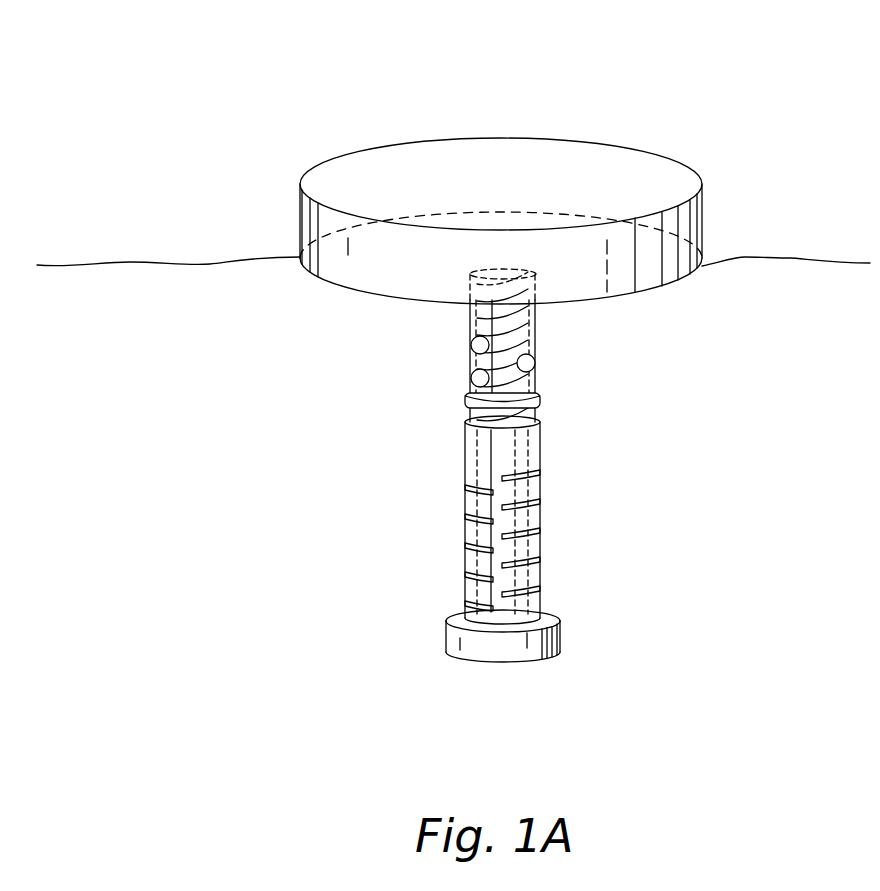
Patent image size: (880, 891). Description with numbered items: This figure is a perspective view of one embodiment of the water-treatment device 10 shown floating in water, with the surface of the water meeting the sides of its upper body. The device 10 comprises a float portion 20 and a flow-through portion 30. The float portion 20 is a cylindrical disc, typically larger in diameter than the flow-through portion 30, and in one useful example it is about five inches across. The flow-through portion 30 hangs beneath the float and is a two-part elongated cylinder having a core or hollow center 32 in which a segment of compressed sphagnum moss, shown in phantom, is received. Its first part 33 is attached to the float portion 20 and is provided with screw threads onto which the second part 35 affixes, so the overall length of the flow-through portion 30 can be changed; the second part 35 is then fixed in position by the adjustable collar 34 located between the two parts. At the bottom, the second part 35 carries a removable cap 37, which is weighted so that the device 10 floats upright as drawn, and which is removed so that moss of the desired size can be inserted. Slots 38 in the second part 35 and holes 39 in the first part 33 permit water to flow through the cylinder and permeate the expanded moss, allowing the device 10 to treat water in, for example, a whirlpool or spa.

The device 10 is at (722, 88).
The float portion 20 is at (658, 178).
The flow-through portion 30 is at (603, 478).
The hollow center 32 is at (533, 335).
The first part 33 is at (470, 323).
The adjustable collar 34 is at (467, 403).
The second part 35 is at (465, 475).
The removable cap 37 is at (460, 642).
The slots 38 is at (470, 550).
The holes 39 is at (527, 360).